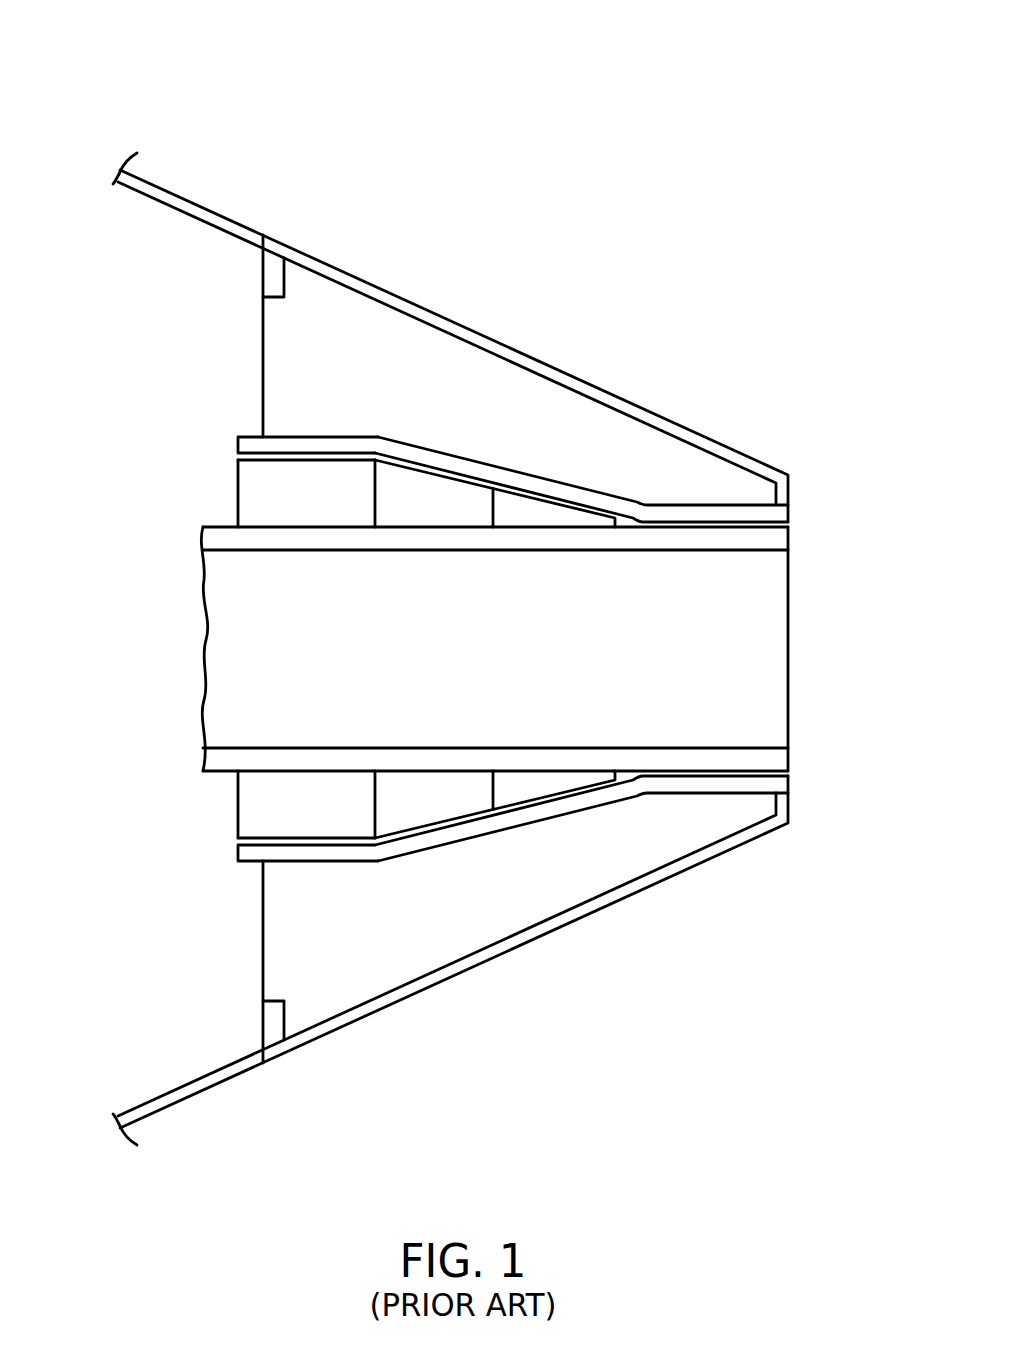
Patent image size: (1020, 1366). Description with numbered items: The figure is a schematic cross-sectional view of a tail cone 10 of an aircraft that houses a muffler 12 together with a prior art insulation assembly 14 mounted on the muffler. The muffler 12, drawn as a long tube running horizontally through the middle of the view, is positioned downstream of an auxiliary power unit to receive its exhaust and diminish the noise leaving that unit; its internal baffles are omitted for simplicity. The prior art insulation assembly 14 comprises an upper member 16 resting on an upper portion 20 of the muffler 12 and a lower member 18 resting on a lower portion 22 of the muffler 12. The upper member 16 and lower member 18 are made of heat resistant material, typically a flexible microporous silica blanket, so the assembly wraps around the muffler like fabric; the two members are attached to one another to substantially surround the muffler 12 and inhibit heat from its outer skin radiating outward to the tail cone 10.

The tail cone 10 is at (664, 123).
The muffler 12 is at (210, 463).
The prior art insulation assembly 14 is at (237, 445).
The upper member 16 is at (353, 437).
The lower member 18 is at (372, 861).
The upper portion 20 is at (238, 509).
The lower portion 22 is at (238, 791).